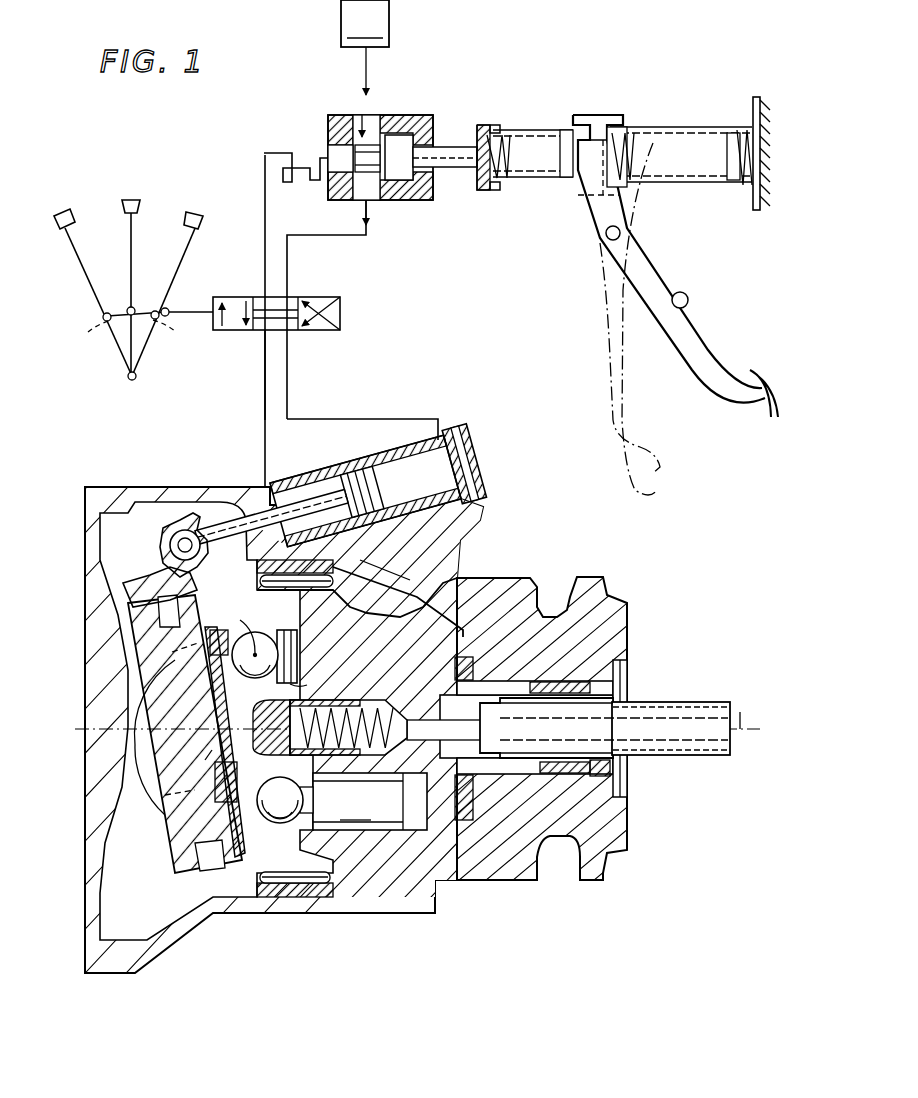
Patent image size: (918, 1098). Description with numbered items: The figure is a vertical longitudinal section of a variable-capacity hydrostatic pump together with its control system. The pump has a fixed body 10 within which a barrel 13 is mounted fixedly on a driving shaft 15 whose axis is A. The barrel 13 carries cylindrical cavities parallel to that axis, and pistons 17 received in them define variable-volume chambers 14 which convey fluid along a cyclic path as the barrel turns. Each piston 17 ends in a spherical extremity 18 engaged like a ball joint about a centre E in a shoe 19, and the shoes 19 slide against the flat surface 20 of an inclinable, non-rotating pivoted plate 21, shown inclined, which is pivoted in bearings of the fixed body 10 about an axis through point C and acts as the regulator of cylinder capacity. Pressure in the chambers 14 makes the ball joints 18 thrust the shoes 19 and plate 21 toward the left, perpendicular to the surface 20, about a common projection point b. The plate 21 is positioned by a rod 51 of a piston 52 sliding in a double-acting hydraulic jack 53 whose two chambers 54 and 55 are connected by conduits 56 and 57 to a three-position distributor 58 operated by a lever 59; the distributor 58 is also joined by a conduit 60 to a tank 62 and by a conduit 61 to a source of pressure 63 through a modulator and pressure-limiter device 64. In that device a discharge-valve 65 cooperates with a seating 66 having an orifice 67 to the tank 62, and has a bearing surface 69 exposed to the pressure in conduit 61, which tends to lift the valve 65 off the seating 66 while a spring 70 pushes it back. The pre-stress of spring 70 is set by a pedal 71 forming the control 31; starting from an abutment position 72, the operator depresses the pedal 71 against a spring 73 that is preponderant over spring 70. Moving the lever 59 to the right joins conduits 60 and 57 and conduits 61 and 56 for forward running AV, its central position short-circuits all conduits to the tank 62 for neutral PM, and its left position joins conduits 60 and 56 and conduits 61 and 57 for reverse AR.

The fixed body 10 is at (462, 539).
The barrel 13 is at (450, 578).
The chambers 14 is at (417, 832).
The driving shaft 15 is at (708, 717).
The pistons 17 is at (340, 765).
The spherical extremity 18 is at (293, 815).
The shoe 19 is at (280, 824).
The surface 20 is at (242, 793).
The pivoted plate 21 is at (232, 858).
The control 31 is at (702, 345).
The rod 51 is at (258, 469).
The piston 52 is at (359, 469).
The double-acting hydraulic jack 53 is at (374, 466).
The chamber 54 is at (487, 457).
The chamber 55 is at (272, 535).
The conduit 56 is at (357, 418).
The conduit 57 is at (263, 388).
The distributor 58 is at (234, 294).
The lever 59 is at (133, 228).
The conduit 60 is at (264, 207).
The conduit 61 is at (290, 258).
The tank 62 is at (292, 184).
The source of pressure 63 is at (365, 47).
The modulator and pressure-limiter device 64 is at (412, 116).
The discharge-valve 65 is at (360, 118).
The seating 66 is at (350, 145).
The orifice 67 is at (327, 158).
The bearing surface 69 is at (372, 165).
The spring 70 is at (512, 127).
The pedal 71 is at (760, 367).
The abutment position 72 is at (686, 293).
The spring 73 is at (715, 127).